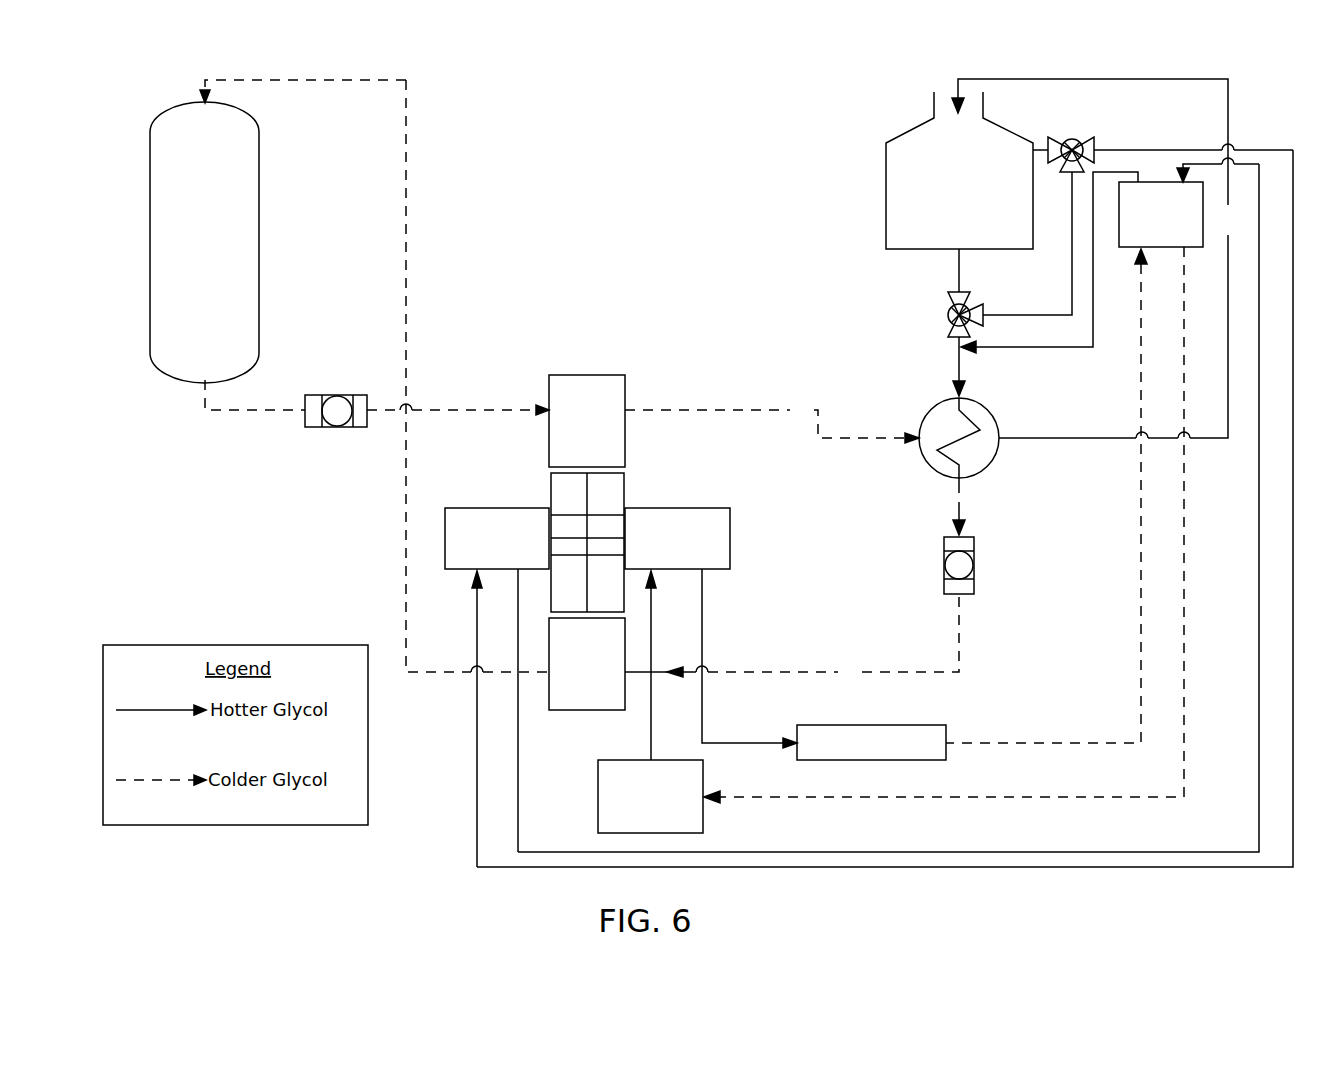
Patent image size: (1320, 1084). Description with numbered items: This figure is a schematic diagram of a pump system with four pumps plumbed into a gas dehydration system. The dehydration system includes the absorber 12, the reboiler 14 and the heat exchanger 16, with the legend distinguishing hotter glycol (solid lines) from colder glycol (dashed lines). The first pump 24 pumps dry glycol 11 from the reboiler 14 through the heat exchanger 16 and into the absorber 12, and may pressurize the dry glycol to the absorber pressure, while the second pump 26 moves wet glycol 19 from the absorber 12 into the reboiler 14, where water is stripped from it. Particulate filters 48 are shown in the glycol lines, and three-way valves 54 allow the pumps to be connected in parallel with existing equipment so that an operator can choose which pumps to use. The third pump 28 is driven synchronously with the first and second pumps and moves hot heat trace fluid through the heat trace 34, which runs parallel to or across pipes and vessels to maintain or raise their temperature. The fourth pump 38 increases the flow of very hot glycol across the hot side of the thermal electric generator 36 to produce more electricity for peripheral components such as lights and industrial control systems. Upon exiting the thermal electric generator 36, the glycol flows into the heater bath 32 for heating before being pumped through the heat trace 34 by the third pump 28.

The absorber 12 is at (204, 242).
The dry glycol 11 is at (958, 278).
The wet glycol 19 is at (714, 269).
The particulate filter 48 is at (338, 396).
The second pump 26 is at (587, 421).
The first pump 24 is at (587, 664).
The fourth pump 38 is at (869, 508).
The third pump 28 is at (711, 634).
The reboiler 14 is at (959, 170).
The three-way valve 54 is at (948, 316).
The thermal electric generator 36 is at (981, 480).
The heat exchanger 16 is at (925, 412).
The heat trace 34 is at (871, 742).
The heater bath 32 is at (650, 796).